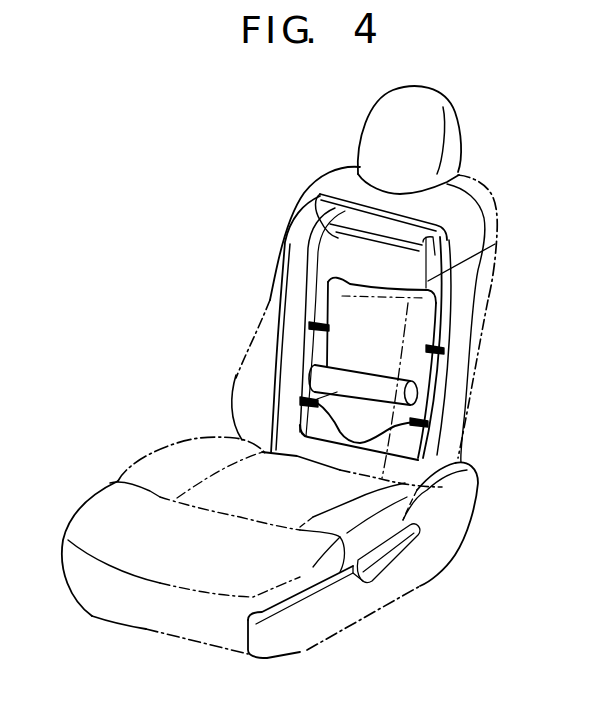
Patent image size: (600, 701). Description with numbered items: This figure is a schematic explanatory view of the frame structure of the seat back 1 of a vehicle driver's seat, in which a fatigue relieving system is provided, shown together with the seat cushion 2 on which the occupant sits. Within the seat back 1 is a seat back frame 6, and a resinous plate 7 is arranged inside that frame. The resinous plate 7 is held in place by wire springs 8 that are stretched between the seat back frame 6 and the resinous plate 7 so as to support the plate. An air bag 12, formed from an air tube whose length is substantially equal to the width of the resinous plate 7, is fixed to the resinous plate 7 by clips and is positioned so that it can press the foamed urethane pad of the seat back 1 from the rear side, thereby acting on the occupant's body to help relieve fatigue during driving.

The seat back 1 is at (498, 208).
The seat cushion 2 is at (125, 595).
The seat back frame 6 is at (308, 228).
The resinous plate 7 is at (300, 357).
The wire springs 8 is at (318, 327).
The air bag 12 is at (303, 408).